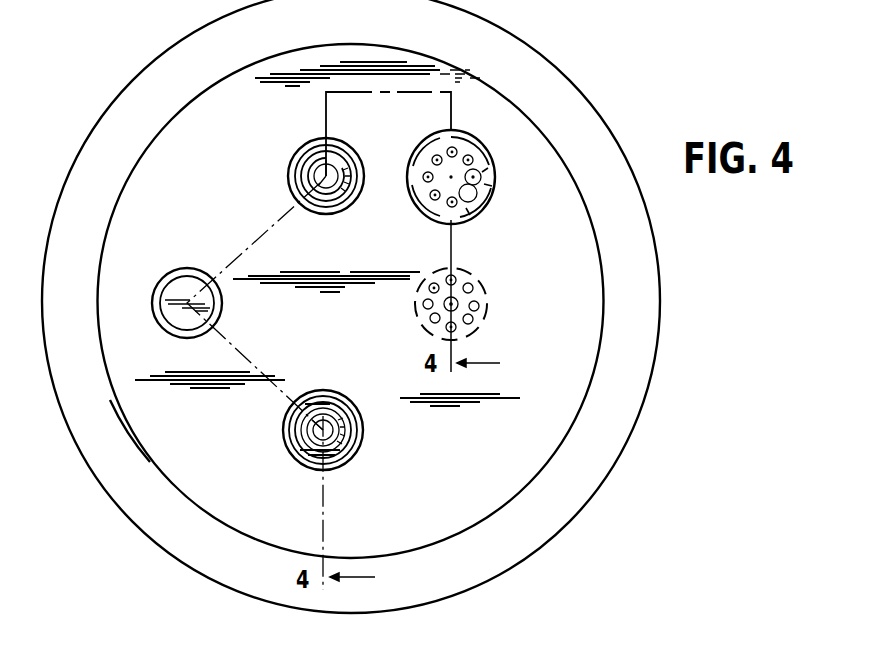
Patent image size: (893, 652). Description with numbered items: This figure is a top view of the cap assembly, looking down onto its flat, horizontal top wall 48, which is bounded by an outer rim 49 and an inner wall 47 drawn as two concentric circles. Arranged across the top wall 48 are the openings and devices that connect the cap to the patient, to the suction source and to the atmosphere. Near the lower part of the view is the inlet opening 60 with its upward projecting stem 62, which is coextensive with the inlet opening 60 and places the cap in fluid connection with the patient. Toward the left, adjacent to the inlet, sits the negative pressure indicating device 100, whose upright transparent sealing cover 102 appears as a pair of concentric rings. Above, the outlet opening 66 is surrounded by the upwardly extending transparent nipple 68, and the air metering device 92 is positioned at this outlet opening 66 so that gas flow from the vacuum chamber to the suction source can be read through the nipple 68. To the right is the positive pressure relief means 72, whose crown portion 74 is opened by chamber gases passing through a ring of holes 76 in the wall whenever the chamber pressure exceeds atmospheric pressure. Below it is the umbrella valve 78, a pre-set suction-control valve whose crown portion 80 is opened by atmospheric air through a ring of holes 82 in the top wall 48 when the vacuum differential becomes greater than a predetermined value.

The inner wall 47 is at (98, 267).
The top wall 48 is at (146, 428).
The outer housing 49 is at (100, 130).
The inlet opening 60 is at (346, 410).
The upward projecting stem 62 is at (348, 446).
The outlet opening 66 is at (336, 160).
The nipple 68 is at (300, 157).
The positive pressure relief means 72 is at (489, 162).
The crown portion 74 is at (455, 167).
The ring of holes 76 is at (442, 128).
The umbrella valve 78 is at (492, 302).
The crown portion 80 is at (486, 312).
The ring of holes 82 is at (474, 322).
The air metering device 92 is at (298, 164).
The negative pressure indicating device 100 is at (170, 330).
The sealing cover 102 is at (180, 276).